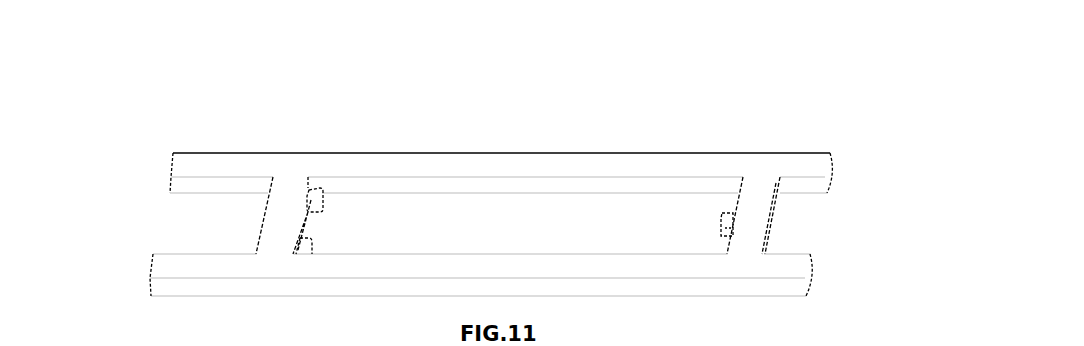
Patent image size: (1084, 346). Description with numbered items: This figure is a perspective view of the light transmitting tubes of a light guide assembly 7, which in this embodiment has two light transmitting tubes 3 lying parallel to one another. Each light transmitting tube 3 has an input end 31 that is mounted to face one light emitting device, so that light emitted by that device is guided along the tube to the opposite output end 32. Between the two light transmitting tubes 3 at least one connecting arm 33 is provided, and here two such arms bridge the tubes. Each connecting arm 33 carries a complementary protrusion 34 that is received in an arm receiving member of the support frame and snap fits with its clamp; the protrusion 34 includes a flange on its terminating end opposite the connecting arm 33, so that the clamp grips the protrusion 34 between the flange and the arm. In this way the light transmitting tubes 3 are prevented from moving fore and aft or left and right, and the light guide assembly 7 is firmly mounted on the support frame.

The light guide assembly 7 is at (175, 68).
The light transmitting tube 3 is at (440, 270).
The input end 31 is at (845, 175).
The output end 32 is at (168, 170).
The connecting arm 33 is at (752, 207).
The protrusion 34 is at (305, 193).